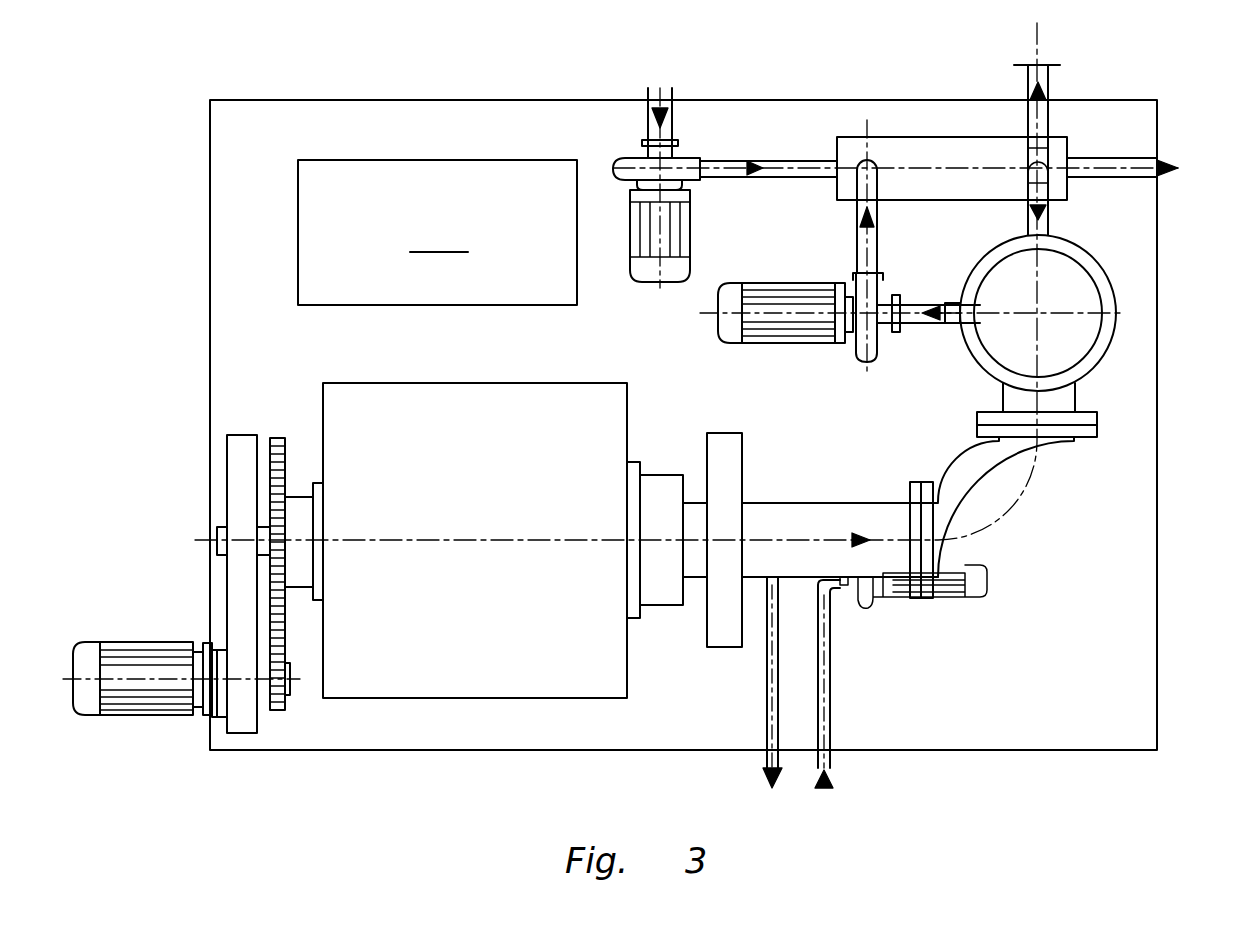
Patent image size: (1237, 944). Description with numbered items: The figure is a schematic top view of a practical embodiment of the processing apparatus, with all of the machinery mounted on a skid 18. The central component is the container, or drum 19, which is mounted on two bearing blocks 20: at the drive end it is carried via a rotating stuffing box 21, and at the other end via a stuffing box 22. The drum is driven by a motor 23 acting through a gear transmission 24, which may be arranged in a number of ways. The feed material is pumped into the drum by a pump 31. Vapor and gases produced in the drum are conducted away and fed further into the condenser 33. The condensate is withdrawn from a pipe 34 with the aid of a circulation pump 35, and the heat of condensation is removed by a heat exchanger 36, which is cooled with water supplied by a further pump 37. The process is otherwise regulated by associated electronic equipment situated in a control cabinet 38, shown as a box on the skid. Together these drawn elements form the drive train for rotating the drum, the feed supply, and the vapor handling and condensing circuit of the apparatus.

The skid 18 is at (363, 732).
The container (drum) 19 is at (468, 683).
The bearing blocks 20 is at (245, 443).
The rotating stuffing box 21 is at (302, 507).
The stuffing box 22 is at (663, 485).
The motor 23 is at (118, 715).
The gear transmission 24 is at (278, 710).
The pump 31 is at (948, 597).
The condenser 33 is at (1103, 290).
The pipe 34 is at (1047, 82).
The circulation pump 35 is at (778, 333).
The heat exchanger 36 is at (945, 142).
The pump 37 is at (690, 163).
The control cabinet 38 is at (767, 732).